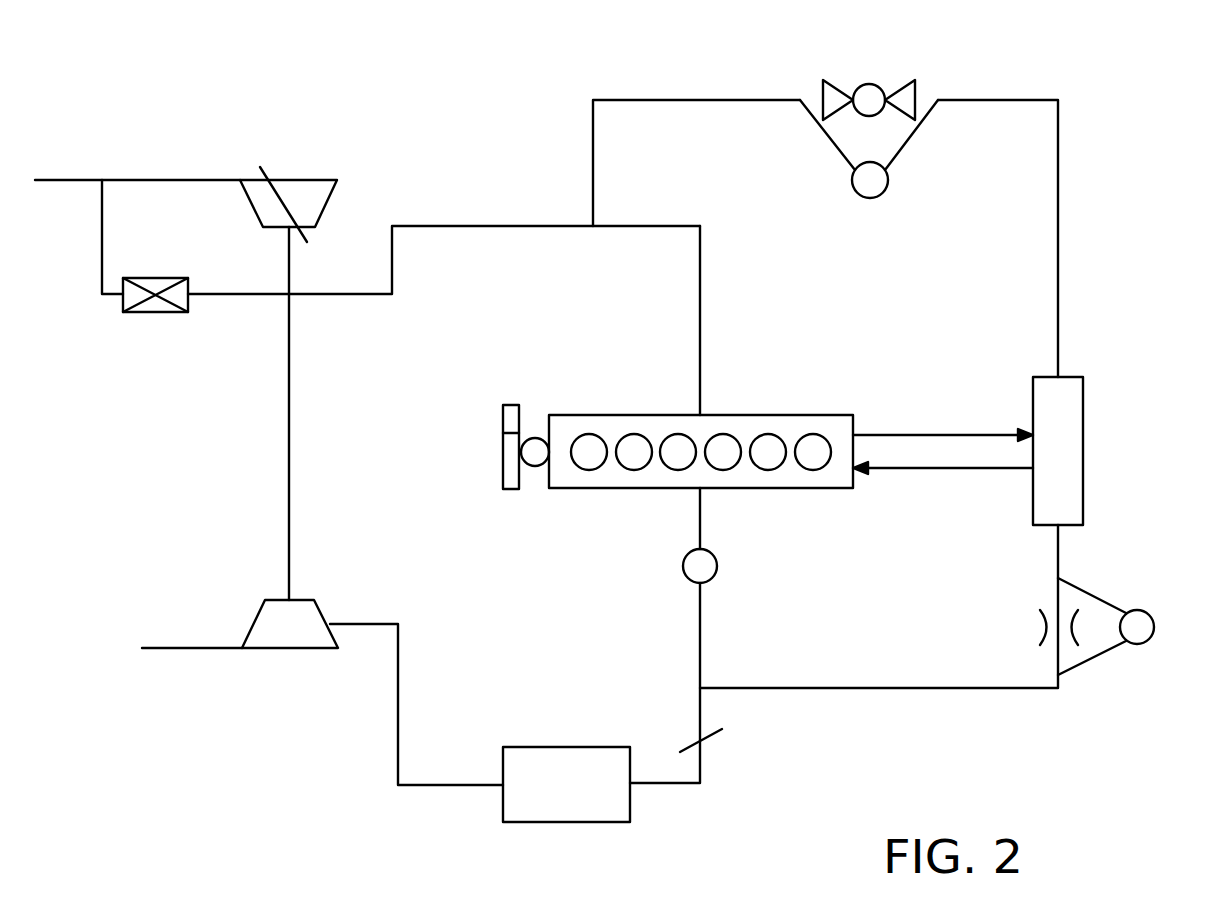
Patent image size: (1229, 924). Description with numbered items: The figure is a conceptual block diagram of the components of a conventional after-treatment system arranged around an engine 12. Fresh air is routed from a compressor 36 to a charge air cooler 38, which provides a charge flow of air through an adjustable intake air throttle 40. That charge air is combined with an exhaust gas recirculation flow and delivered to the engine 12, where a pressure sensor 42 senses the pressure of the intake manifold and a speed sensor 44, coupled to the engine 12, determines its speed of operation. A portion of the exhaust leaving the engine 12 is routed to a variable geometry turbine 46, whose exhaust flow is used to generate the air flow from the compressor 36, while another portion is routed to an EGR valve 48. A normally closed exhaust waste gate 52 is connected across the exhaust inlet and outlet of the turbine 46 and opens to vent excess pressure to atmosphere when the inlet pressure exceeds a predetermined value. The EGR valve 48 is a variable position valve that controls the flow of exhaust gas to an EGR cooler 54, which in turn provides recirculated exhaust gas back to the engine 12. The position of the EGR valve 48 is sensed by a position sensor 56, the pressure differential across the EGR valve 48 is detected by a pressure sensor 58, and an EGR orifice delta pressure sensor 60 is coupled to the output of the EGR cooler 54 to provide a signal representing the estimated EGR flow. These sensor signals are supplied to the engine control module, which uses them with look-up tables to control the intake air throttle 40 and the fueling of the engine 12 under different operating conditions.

The engine 12 is at (795, 411).
The compressor 36 is at (263, 638).
The charge air cooler 38 is at (563, 753).
The adjustable intake air throttle 40 is at (708, 742).
The pressure sensor 42 is at (718, 565).
The speed sensor 44 is at (539, 458).
The variable geometry turbine 46 is at (293, 185).
The EGR valve 48 is at (900, 131).
The exhaust waste gate 52 is at (156, 305).
The EGR cooler 54 is at (1077, 413).
The position sensor 56 is at (866, 88).
The pressure sensor 58 is at (868, 191).
The EGR orifice delta pressure sensor 60 is at (1147, 628).